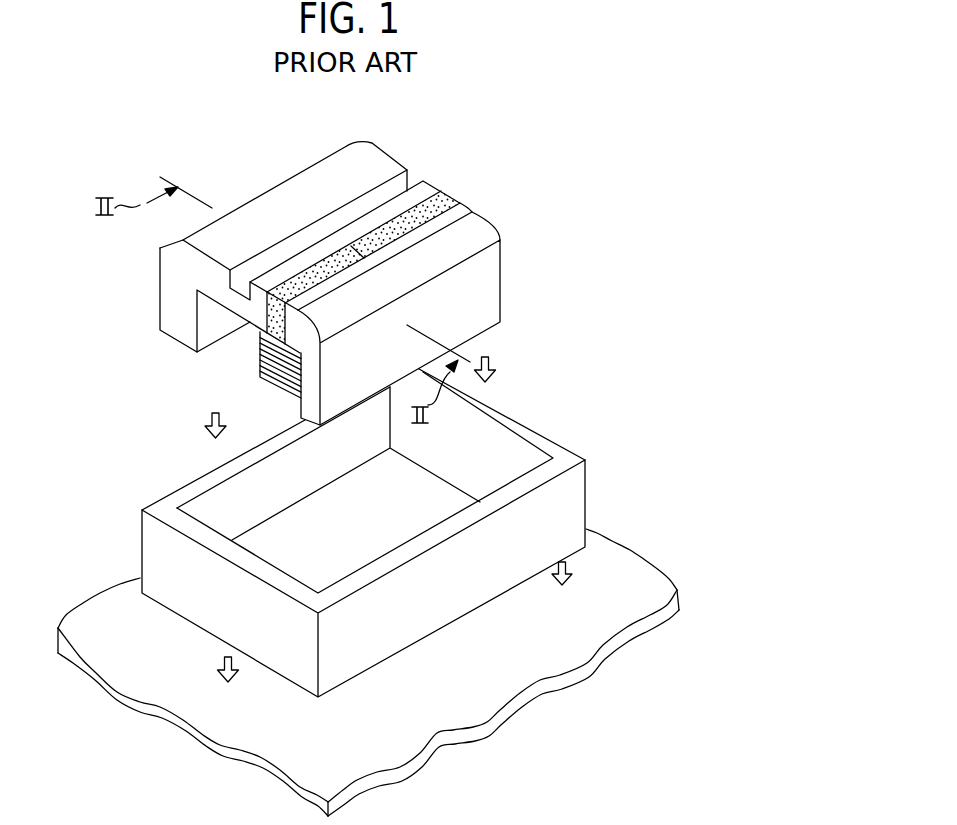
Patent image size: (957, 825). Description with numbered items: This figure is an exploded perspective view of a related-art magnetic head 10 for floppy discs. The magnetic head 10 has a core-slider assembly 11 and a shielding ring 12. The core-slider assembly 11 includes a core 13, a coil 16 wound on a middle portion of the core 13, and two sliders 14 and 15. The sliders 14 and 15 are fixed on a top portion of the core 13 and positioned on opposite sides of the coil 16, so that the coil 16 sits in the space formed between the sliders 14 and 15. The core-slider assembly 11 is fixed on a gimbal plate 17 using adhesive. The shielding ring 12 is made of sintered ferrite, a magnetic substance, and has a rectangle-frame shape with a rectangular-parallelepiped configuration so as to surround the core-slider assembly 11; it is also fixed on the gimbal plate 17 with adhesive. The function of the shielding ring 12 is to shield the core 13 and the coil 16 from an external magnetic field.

The magnetic head 10 is at (583, 169).
The core-slider assembly 11 is at (513, 270).
The shielding ring 12 is at (563, 498).
The core 13 is at (448, 197).
The slider 14 is at (172, 292).
The slider 15 is at (483, 303).
The coil 16 is at (260, 361).
The gimbal plate 17 is at (383, 755).